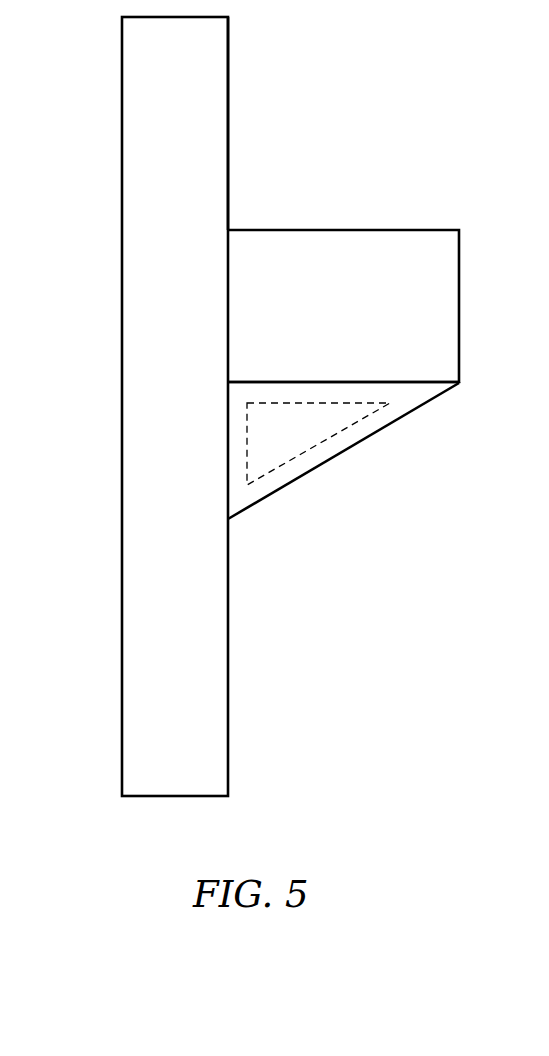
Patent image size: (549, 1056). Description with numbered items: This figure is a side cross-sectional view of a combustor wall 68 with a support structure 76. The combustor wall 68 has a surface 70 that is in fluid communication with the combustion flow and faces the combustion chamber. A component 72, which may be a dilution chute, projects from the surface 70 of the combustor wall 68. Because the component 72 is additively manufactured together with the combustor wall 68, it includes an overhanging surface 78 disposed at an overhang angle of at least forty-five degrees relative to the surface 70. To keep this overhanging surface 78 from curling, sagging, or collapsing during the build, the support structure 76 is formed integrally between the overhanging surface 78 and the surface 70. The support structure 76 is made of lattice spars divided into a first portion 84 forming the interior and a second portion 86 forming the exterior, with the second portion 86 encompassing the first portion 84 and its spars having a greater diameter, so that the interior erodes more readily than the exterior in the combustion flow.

The combustor wall 68 is at (150, 136).
The surface 70 is at (228, 178).
The component 72 is at (318, 312).
The overhanging surface 78 is at (386, 382).
The support structure 76 is at (337, 483).
The second portion of the plurality of lattice spars 86 is at (413, 395).
The first portion of the plurality of lattice spars 84 is at (293, 442).